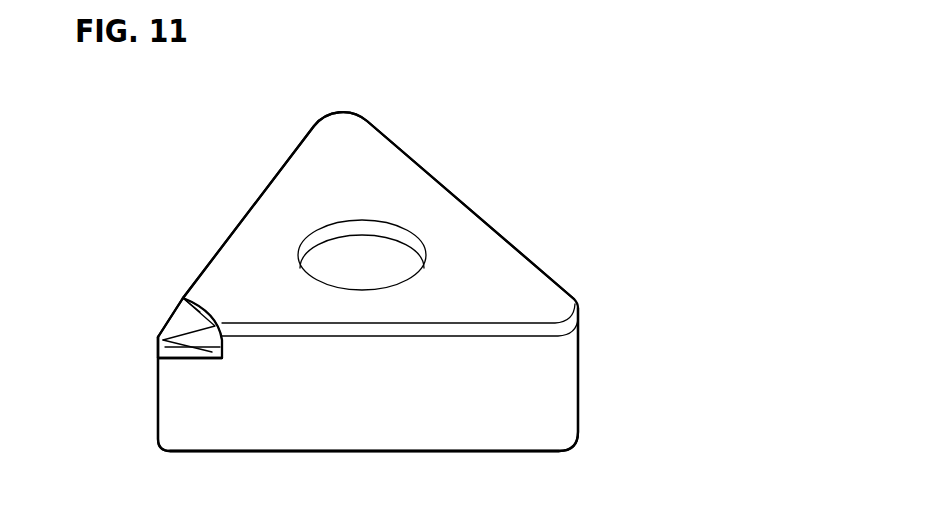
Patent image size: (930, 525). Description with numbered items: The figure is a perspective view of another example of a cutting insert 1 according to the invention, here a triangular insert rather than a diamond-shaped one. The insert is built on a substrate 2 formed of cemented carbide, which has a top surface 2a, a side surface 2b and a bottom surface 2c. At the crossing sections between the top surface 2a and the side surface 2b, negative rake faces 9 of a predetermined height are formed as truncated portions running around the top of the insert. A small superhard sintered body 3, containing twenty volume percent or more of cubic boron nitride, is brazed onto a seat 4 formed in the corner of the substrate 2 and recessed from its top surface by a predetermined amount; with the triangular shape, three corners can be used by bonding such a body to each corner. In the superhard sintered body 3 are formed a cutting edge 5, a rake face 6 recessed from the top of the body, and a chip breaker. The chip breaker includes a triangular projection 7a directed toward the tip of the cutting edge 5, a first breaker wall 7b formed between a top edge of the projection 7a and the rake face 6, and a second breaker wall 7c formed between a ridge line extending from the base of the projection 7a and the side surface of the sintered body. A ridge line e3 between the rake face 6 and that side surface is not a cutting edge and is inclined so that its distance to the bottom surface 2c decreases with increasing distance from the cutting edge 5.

The cutting insert 1 is at (467, 169).
The substrate 2 is at (488, 414).
The top surface 2a is at (500, 267).
The side surface 2b is at (407, 423).
The bottom surface 2c is at (530, 452).
The superhard sintered body 3 is at (180, 367).
The seat 4 is at (216, 360).
The cutting edge 5 is at (158, 337).
The rake face 6 is at (167, 328).
The projection 7a is at (185, 300).
The first breaker wall 7b is at (192, 303).
The second breaker wall 7c is at (223, 360).
The negative rake face 9 is at (331, 333).
The ridge line e3 is at (203, 322).